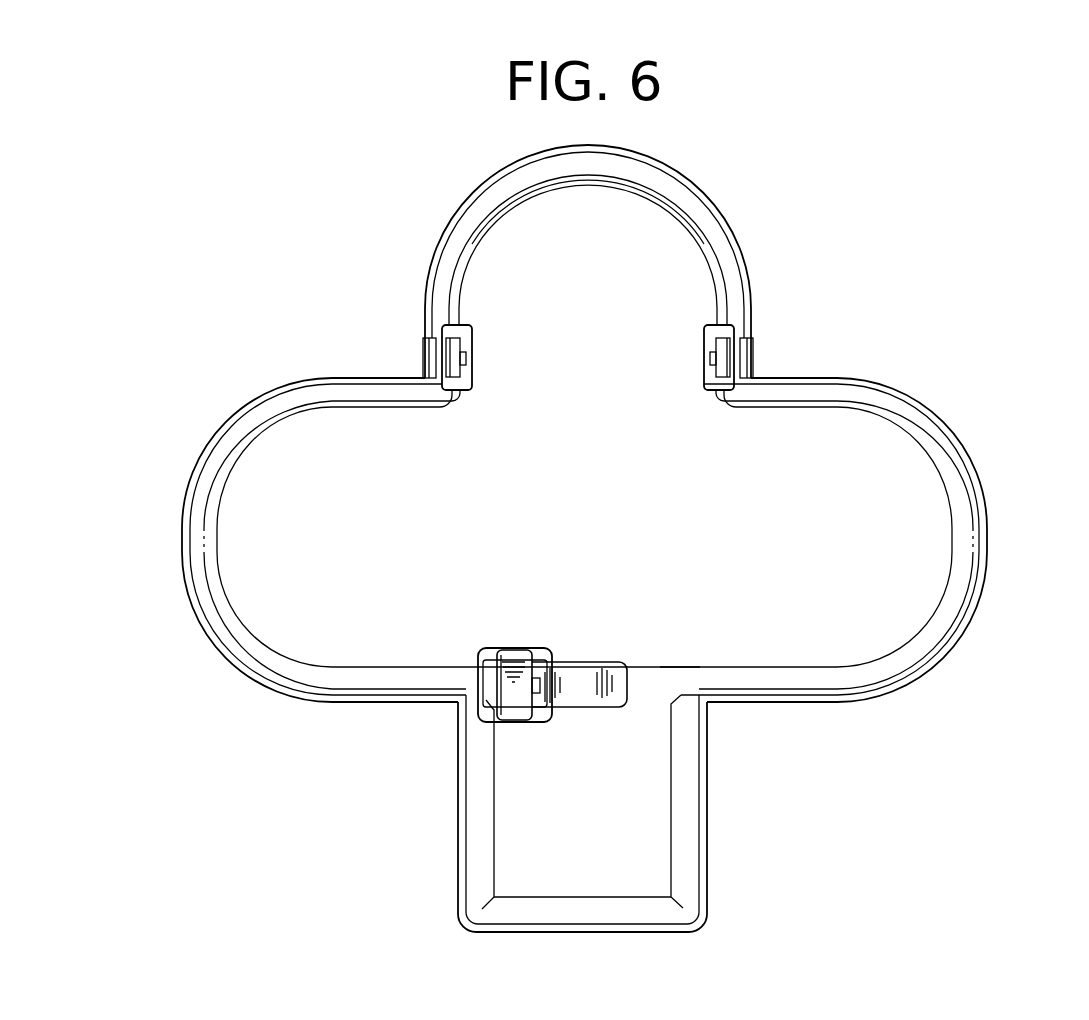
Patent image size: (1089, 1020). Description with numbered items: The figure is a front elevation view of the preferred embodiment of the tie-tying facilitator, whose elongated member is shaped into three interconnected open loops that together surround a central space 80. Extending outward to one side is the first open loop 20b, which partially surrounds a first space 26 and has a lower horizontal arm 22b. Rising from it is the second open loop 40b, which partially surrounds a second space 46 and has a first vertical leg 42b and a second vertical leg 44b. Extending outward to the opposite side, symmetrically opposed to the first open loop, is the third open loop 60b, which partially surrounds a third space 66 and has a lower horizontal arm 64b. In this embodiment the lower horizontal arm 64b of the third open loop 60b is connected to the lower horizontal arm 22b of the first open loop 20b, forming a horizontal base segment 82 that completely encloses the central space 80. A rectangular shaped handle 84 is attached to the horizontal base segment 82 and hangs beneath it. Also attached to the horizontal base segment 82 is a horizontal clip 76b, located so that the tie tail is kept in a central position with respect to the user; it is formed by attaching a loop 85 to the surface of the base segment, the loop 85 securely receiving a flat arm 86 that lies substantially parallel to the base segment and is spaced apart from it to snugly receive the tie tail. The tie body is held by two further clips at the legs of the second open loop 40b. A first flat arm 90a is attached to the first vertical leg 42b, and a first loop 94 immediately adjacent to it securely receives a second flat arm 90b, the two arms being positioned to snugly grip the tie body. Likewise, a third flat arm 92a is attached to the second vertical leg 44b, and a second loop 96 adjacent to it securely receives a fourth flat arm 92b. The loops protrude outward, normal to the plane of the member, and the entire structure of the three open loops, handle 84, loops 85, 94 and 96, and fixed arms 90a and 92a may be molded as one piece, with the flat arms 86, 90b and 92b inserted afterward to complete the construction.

The first open loop 20b is at (953, 453).
The lower horizontal arm of the first open loop 22b is at (810, 687).
The first space 26 is at (817, 562).
The second open loop 40b is at (657, 177).
The first vertical leg of the second open loop 42b is at (743, 275).
The second vertical leg of the second open loop 44b is at (472, 203).
The second space 46 is at (590, 273).
The third open loop 60b is at (228, 632).
The lower horizontal arm of the third open loop 64b is at (366, 682).
The third space 66 is at (380, 535).
The horizontal clip 76b is at (615, 715).
The central space 80 is at (570, 511).
The horizontal base segment 82 is at (680, 660).
The rectangular shaped handle 84 is at (683, 857).
The loop 85 is at (511, 708).
The flat arm 86 is at (578, 677).
The first flat arm 90a is at (750, 352).
The second flat arm 90b is at (712, 378).
The third flat arm 92a is at (426, 352).
The fourth flat arm 92b is at (511, 364).
The first loop 94 is at (712, 328).
The second loop 96 is at (457, 331).